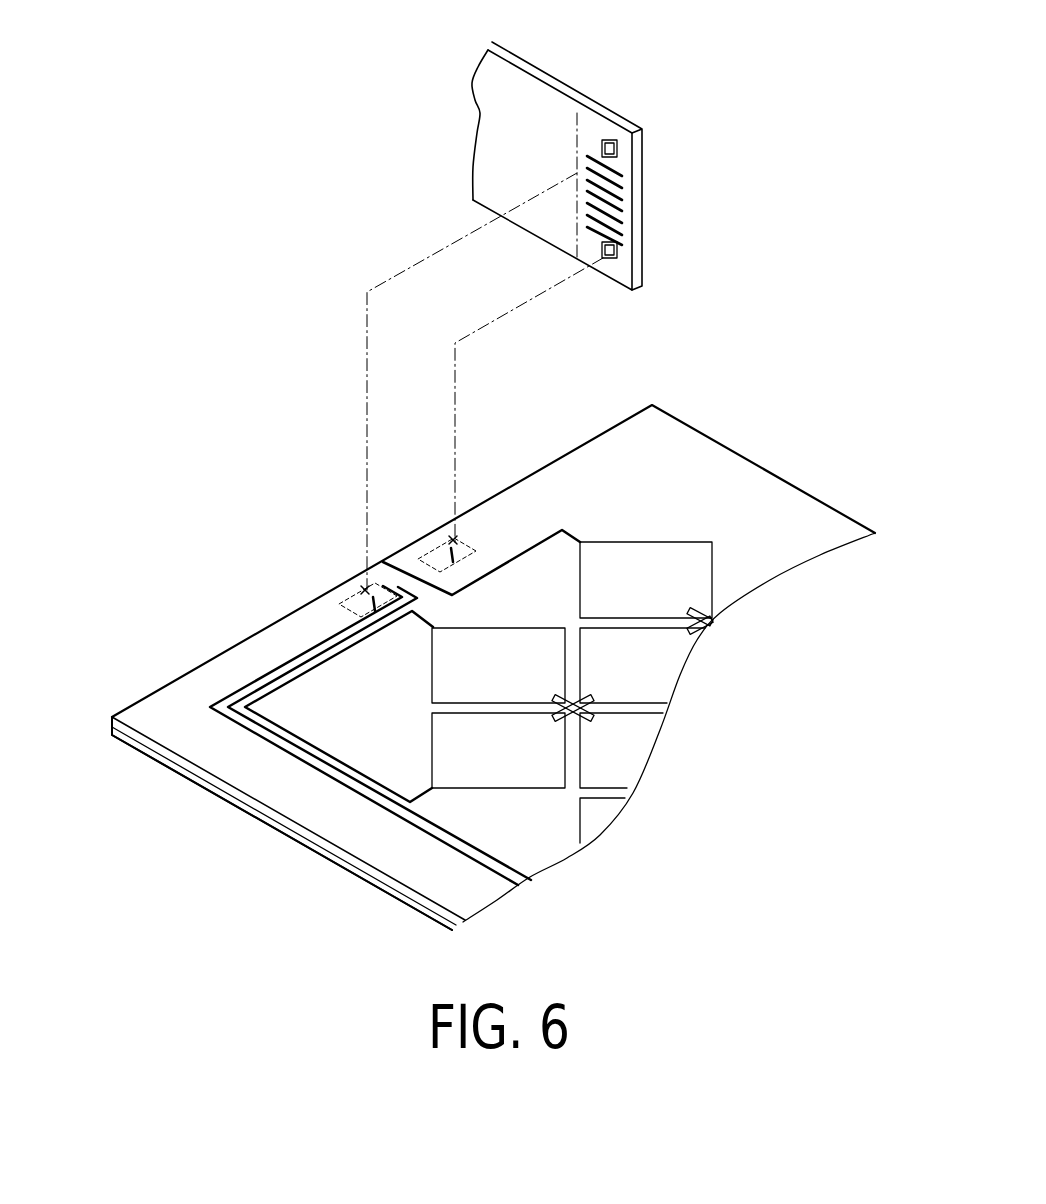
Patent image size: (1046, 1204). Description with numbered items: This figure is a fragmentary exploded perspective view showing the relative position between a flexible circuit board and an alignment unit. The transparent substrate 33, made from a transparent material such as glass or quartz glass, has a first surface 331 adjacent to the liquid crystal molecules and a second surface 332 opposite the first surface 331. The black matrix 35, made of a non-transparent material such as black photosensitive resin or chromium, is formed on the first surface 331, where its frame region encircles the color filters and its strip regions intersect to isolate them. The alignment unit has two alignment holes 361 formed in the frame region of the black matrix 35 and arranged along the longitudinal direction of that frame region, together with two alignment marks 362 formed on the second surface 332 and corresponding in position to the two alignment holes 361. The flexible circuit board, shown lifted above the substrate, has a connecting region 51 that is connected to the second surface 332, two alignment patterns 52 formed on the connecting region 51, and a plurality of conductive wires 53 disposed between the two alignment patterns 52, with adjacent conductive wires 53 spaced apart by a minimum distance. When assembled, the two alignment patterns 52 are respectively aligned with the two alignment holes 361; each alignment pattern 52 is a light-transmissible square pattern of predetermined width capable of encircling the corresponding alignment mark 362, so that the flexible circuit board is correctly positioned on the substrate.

The transparent substrate 33 is at (110, 720).
The first surface 331 is at (140, 750).
The second surface 332 is at (128, 712).
The black matrix 35 is at (195, 778).
The alignment holes 361 is at (453, 540).
The alignment marks 362 is at (457, 541).
The connecting region 51 is at (593, 128).
The alignment patterns 52 is at (617, 157).
The conductive wires 53 is at (617, 207).